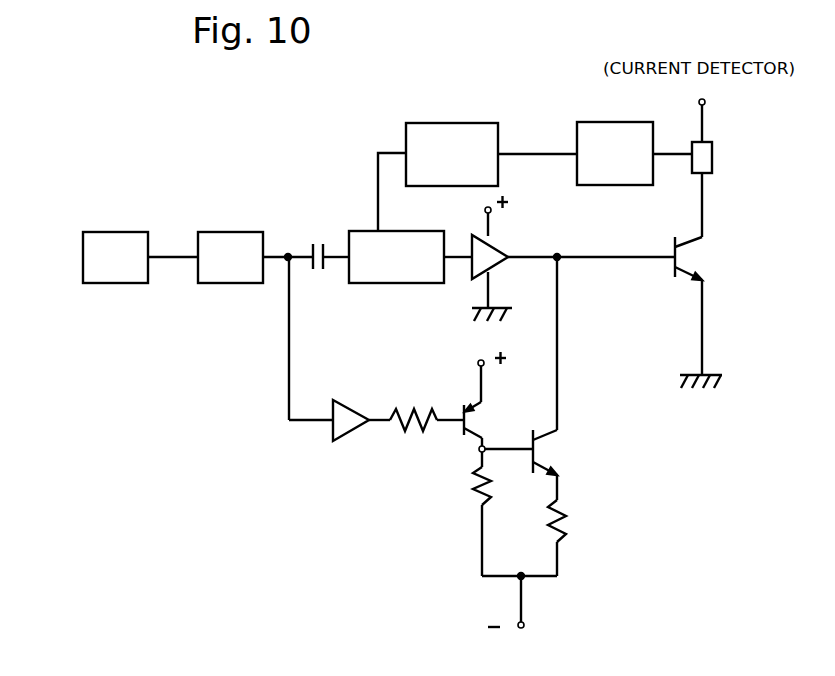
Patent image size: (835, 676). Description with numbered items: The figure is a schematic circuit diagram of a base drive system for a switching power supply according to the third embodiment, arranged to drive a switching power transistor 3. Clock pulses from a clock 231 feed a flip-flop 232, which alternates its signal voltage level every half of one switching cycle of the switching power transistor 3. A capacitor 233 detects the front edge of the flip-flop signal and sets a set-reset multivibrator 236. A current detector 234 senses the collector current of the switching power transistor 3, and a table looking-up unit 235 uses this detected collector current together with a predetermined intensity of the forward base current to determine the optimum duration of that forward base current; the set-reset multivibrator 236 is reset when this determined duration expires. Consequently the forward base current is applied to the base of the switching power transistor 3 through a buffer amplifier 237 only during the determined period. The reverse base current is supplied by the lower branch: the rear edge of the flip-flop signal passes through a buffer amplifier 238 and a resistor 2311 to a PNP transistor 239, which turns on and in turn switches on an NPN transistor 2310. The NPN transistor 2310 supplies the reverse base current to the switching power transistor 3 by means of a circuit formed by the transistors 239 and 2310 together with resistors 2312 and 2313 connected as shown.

The clock 231 is at (110, 284).
The flip-flop 232 is at (226, 284).
The capacitor 233 is at (318, 242).
The current detector 234 is at (613, 136).
The table looking-up unit 235 is at (452, 136).
The set-reset multivibrator 236 is at (400, 284).
The buffer amplifier 237 is at (502, 246).
The buffer amplifier 238 is at (348, 441).
The PNP transistor 239 is at (477, 418).
The NPN transistor 2310 is at (559, 453).
The resistor 2311 is at (418, 440).
The resistor 2312 is at (470, 507).
The resistor 2313 is at (572, 527).
The switching power transistor 3 is at (702, 258).